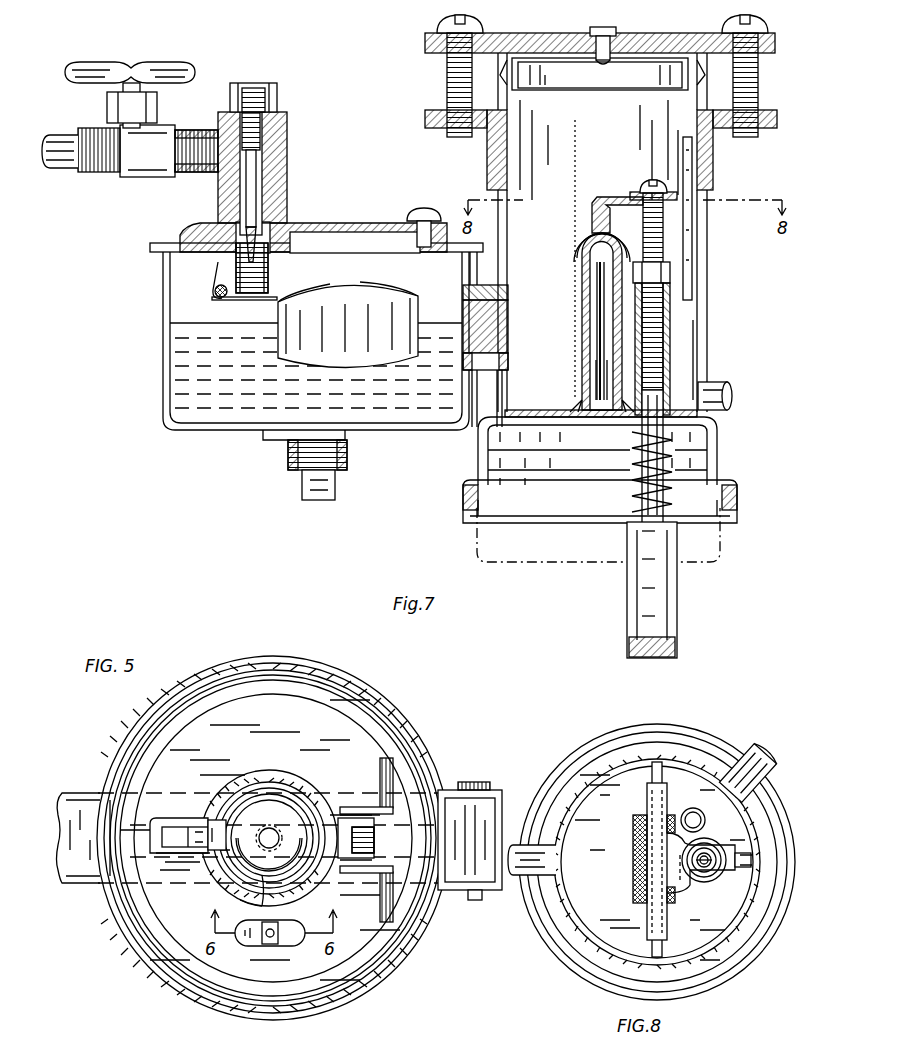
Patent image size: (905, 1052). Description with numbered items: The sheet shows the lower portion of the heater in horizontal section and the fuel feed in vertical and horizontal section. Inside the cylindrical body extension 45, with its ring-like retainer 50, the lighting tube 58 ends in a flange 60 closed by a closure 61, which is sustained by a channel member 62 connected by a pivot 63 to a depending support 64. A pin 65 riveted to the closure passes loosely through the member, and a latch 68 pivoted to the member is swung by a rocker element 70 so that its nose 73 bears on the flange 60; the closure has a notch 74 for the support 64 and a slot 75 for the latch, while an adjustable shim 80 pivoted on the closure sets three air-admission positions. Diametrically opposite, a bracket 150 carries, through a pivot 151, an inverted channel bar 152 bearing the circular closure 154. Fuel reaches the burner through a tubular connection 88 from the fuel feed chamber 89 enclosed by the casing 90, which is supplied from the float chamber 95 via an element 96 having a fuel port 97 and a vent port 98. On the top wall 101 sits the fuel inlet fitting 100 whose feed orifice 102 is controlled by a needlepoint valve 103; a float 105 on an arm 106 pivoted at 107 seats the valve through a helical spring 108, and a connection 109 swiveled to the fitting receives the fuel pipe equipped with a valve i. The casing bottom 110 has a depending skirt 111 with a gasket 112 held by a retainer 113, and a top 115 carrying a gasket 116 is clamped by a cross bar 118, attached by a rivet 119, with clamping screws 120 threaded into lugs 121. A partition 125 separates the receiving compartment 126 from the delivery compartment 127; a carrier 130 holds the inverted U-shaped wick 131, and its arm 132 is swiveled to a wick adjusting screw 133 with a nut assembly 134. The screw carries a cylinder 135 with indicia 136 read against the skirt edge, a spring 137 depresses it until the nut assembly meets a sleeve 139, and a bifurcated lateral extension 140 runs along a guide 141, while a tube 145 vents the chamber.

In FIG. 7, the valve i is at (55, 168).
In FIG. 5, the body extension 45 is at (402, 720).
In FIG. 5, the ring-like retainer 50 is at (424, 762).
In FIG. 5, the lighting tube 58 is at (285, 773).
In FIG. 5, the flange 60 is at (222, 890).
In FIG. 5, the closure 61 is at (305, 712).
In FIG. 5, the member 62 is at (362, 800).
In FIG. 5, the pivot 63 is at (374, 840).
In FIG. 5, the support 64 is at (372, 830).
In FIG. 5, the pin 65 is at (278, 830).
In FIG. 5, the latch 68 is at (172, 855).
In FIG. 5, the rocker element 70 is at (318, 890).
In FIG. 5, the nose 73 is at (222, 838).
In FIG. 5, the notch 74 is at (375, 866).
In FIG. 5, the slot 75 is at (172, 820).
In FIG. 5, the adjustable shim 80 is at (275, 950).
In FIG. 7, the tubular connection 88 is at (722, 390).
In FIG. 8, the tubular connection 88 is at (733, 757).
In FIG. 7, the fuel feed chamber 89 is at (632, 115).
In FIG. 7, the cylindrical casing 90 is at (707, 334).
In FIG. 8, the cylindrical casing 90 is at (590, 787).
In FIG. 7, the float chamber 95 is at (163, 338).
In FIG. 7, the element 96 is at (463, 318).
In FIG. 8, the element 96 is at (545, 880).
In FIG. 7, the fuel port 97 is at (486, 365).
In FIG. 7, the vent port 98 is at (463, 292).
In FIG. 7, the fuel inlet fitting 100 is at (287, 160).
In FIG. 7, the top wall 101 is at (300, 222).
In FIG. 7, the feed orifice 102 is at (287, 190).
In FIG. 7, the needlepoint valve 103 is at (246, 238).
In FIG. 7, the float 105 is at (362, 309).
In FIG. 7, the arm 106 is at (238, 300).
In FIG. 7, the pivot 107 is at (215, 292).
In FIG. 7, the helical spring 108 is at (268, 268).
In FIG. 7, the connection 109 is at (277, 126).
In FIG. 7, the bottom 110 is at (560, 400).
In FIG. 8, the bottom 110 is at (630, 937).
In FIG. 7, the depending skirt 111 is at (478, 460).
In FIG. 8, the depending skirt 111 is at (562, 960).
In FIG. 7, the gasket 112 is at (740, 490).
In FIG. 7, the retainer 113 is at (528, 520).
In FIG. 7, the top 115 is at (497, 52).
In FIG. 7, the gasket 116 is at (522, 68).
In FIG. 7, the cross bar 118 is at (618, 30).
In FIG. 7, the rivet 119 is at (604, 64).
In FIG. 7, the clamping screws 120 is at (447, 85).
In FIG. 7, the lugs 121 is at (440, 128).
In FIG. 7, the partition 125 is at (582, 258).
In FIG. 8, the partition 125 is at (675, 762).
In FIG. 7, the receiving compartment 126 is at (528, 306).
In FIG. 8, the receiving compartment 126 is at (617, 780).
In FIG. 7, the delivery compartment 127 is at (693, 365).
In FIG. 8, the delivery compartment 127 is at (687, 940).
In FIG. 7, the carrier 130 is at (594, 236).
In FIG. 8, the carrier 130 is at (647, 803).
In FIG. 7, the wick 131 is at (590, 355).
In FIG. 8, the wick 131 is at (633, 826).
In FIG. 7, the arm 132 is at (610, 200).
In FIG. 8, the arm 132 is at (667, 870).
In FIG. 7, the wick adjusting screw 133 is at (665, 245).
In FIG. 8, the wick adjusting screw 133 is at (710, 882).
In FIG. 7, the nut assembly 134 is at (670, 270).
In FIG. 8, the nut assembly 134 is at (722, 833).
In FIG. 7, the cylinder 135 is at (677, 586).
In FIG. 7, the indicia 136 is at (640, 570).
In FIG. 7, the spring 137 is at (632, 455).
In FIG. 7, the sleeve 139 is at (670, 322).
In FIG. 8, the sleeve 139 is at (700, 884).
In FIG. 7, the bifurcated lateral extension 140 is at (672, 288).
In FIG. 8, the bifurcated lateral extension 140 is at (753, 892).
In FIG. 7, the guide 141 is at (683, 162).
In FIG. 8, the guide 141 is at (750, 860).
In FIG. 7, the tube 145 is at (597, 300).
In FIG. 8, the tube 145 is at (693, 808).
In FIG. 5, the bracket 150 is at (465, 790).
In FIG. 5, the pivot 151 is at (470, 890).
In FIG. 5, the inverted channel bar 152 is at (85, 885).
In FIG. 7, the closure 154 is at (535, 566).